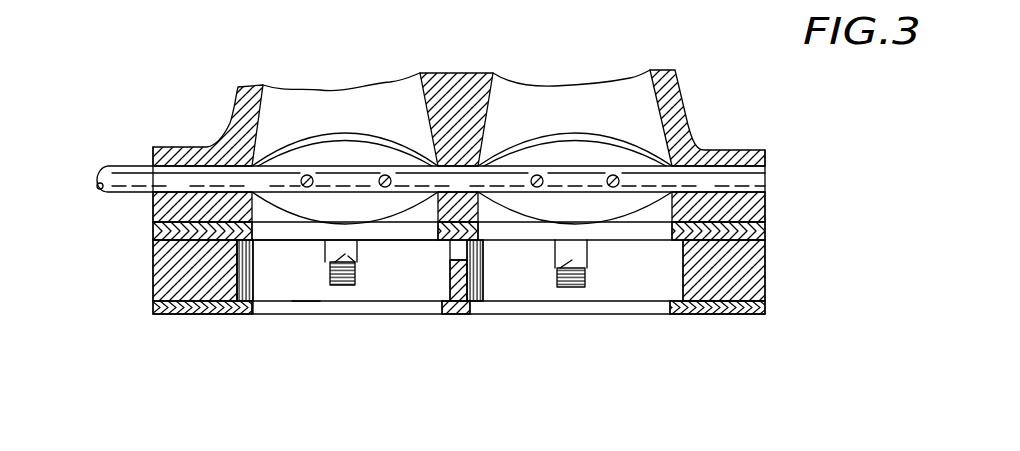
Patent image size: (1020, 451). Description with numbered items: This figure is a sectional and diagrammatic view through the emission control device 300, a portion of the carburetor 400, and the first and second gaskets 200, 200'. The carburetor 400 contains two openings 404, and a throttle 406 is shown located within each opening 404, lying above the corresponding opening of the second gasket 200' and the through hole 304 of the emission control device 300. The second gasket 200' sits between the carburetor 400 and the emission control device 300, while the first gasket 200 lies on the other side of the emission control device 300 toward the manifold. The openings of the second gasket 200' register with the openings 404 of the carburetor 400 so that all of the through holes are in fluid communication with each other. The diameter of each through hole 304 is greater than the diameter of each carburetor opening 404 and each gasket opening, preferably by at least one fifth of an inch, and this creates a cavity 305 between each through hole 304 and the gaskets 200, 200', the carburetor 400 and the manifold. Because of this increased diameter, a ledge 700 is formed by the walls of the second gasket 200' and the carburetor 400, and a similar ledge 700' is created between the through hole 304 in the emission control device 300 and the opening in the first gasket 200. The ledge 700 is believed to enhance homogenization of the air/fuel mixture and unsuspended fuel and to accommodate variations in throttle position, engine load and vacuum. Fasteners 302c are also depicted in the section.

The first gasket 200 is at (484, 324).
The second gasket 200' is at (470, 220).
The emission control device 300 is at (153, 265).
The screw 302c is at (335, 286).
The through hole 304 is at (545, 270).
The cavity 305 is at (305, 302).
The carburetor 400 is at (765, 153).
The carburetor opening 404 is at (600, 105).
The throttle 406 is at (333, 174).
The ledge 700 is at (418, 318).
The ledge 700' is at (423, 306).